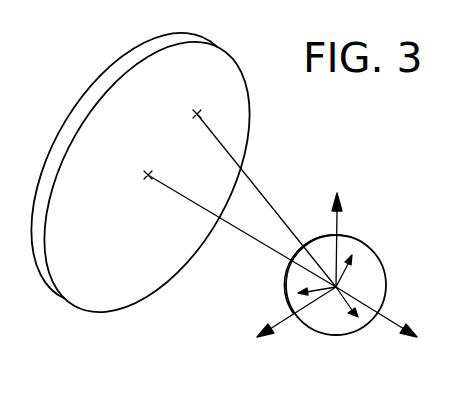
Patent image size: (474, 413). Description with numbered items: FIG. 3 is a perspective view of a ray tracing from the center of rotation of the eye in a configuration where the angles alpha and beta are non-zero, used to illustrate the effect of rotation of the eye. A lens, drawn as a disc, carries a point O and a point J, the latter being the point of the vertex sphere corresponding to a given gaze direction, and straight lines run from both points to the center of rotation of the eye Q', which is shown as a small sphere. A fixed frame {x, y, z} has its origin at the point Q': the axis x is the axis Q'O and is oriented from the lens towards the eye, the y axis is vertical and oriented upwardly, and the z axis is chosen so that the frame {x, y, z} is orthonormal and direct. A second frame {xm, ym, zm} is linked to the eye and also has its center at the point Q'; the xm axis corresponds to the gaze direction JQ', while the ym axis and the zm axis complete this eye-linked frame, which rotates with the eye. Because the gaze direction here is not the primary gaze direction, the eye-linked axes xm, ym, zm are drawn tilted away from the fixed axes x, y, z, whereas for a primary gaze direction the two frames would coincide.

The point J of the vertex sphere J is at (188, 115).
The point O is at (135, 168).
The center of rotation of the eye Q' is at (335, 285).
The x axis x is at (381, 312).
The y axis y is at (345, 231).
The z axis z is at (296, 323).
The x_m axis xm is at (343, 300).
The y_m axis ym is at (340, 270).
The z_m axis zm is at (317, 285).